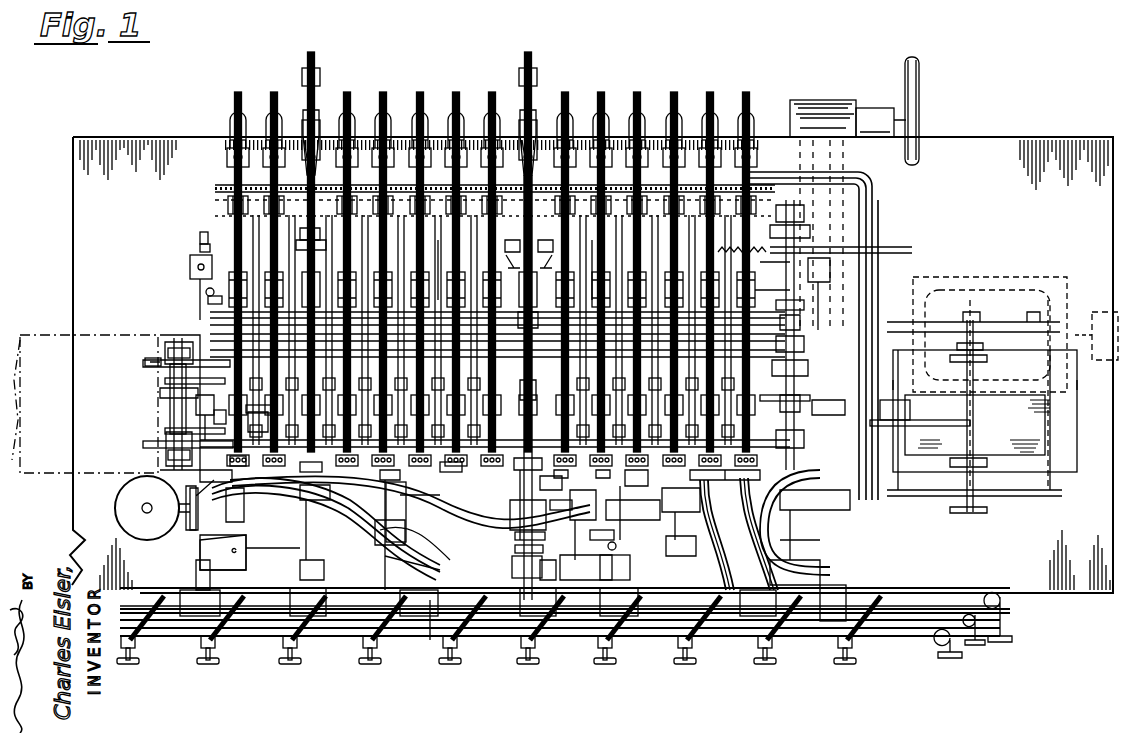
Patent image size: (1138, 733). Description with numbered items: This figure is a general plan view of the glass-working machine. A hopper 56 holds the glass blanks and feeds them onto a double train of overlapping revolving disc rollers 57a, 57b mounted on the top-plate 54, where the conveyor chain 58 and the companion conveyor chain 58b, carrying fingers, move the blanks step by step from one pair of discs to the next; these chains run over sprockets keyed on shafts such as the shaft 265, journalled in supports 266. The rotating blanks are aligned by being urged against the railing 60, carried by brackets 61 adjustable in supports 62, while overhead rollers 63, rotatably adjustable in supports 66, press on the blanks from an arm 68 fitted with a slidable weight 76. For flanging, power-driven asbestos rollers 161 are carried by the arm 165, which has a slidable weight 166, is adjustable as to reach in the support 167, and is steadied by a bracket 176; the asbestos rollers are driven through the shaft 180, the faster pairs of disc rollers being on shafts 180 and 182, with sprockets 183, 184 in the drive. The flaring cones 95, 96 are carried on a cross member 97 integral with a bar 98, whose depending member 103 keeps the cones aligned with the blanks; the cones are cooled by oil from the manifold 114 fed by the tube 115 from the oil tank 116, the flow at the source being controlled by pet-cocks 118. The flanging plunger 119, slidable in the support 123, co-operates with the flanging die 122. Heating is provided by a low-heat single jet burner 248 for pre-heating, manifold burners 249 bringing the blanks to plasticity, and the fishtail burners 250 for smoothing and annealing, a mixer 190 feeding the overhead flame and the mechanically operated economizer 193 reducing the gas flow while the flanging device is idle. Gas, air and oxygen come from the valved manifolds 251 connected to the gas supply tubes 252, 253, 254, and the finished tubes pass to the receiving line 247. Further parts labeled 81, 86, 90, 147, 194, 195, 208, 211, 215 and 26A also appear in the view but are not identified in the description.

The arm 165 is at (318, 112).
The bracket 176 is at (322, 70).
The support 167 is at (306, 135).
The head 90 is at (604, 118).
The arm 68 is at (214, 190).
The shaft 182 is at (300, 232).
The sprocket 184 is at (300, 240).
The shaft 180 is at (200, 238).
The sprocket 183 is at (200, 250).
The support 62 is at (200, 272).
The bracket 61 is at (200, 282).
The slidable weight 166 is at (205, 292).
The mixer 190 is at (210, 300).
The railing 60 is at (210, 316).
The receiving line 247 is at (158, 338).
The support 266 is at (170, 350).
The conveyor chain 58b is at (145, 362).
The disc roller 57b is at (165, 383).
The shaft 265 is at (170, 397).
The overhead roller 63 is at (215, 415).
The disc roller 57a is at (168, 432).
The conveyor chain 58 is at (150, 445).
The pet-cock 118 is at (222, 482).
The fishtail burner 250 is at (238, 462).
The flanging die 122 is at (312, 468).
The lever 208 is at (385, 490).
The tube 115 is at (397, 489).
The tube 194 is at (380, 530).
The tube 215 is at (385, 558).
The oil tank 116 is at (156, 508).
The bracket 147 is at (222, 565).
The flaring cone 96 is at (569, 478).
The flaring cone 95 is at (783, 208).
The cross member 97 is at (569, 504).
The top-plate 54 is at (338, 660).
The support 123 is at (539, 536).
The pipe 195 is at (537, 548).
The plunger 119 is at (533, 564).
The manifold 114 is at (615, 533).
The bar 98 is at (623, 546).
The depending member 103 is at (629, 564).
The manifold burner 249 is at (719, 535).
The single jet burner 248 is at (759, 534).
The economizer 193 is at (800, 525).
The bar 81 is at (522, 261).
The weight 76 is at (772, 276).
The collar 86 is at (790, 315).
The support 66 is at (785, 404).
The burner 26A is at (920, 415).
The hopper 56 is at (975, 425).
The asbestos roller 161 is at (263, 415).
The valved manifold 251 is at (499, 630).
The tie rod 211 is at (419, 629).
The gas supply tube 252 is at (935, 630).
The gas supply tube 253 is at (935, 640).
The gas supply tube 254 is at (940, 650).